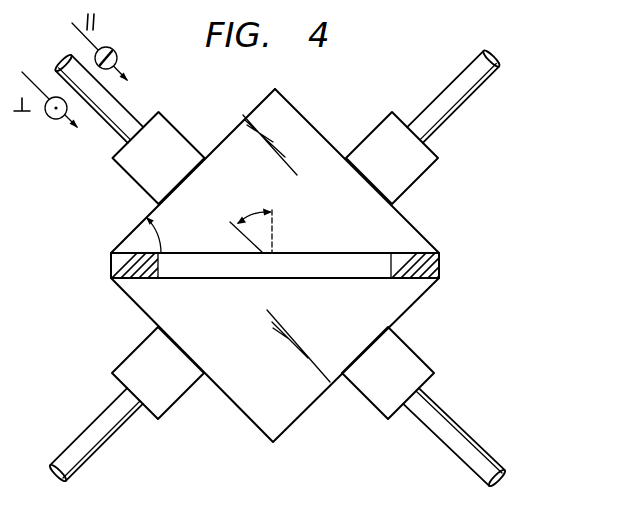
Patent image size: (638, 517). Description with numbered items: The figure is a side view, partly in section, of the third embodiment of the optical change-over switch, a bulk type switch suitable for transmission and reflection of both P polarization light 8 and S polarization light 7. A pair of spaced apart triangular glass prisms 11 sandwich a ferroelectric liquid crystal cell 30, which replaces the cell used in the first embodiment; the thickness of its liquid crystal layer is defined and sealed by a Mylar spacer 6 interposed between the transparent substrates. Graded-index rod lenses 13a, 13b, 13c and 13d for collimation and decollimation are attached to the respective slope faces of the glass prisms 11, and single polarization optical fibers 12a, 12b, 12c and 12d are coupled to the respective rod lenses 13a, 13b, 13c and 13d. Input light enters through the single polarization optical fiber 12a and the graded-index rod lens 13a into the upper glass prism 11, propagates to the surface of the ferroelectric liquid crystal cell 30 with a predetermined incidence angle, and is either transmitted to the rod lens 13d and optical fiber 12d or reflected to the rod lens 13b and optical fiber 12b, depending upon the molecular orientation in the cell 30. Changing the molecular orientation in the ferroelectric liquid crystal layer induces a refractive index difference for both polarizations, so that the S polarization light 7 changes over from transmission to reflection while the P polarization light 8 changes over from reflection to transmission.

The spacer 6 is at (111, 267).
The S polarization light 7 is at (47, 119).
The P polarization light 8 is at (117, 53).
The triangular glass prism 11 is at (284, 100).
The single polarization optical fiber 12a is at (122, 106).
The single polarization optical fiber 12b is at (458, 108).
The single polarization optical fiber 12c is at (97, 420).
The single polarization optical fiber 12d is at (453, 427).
The graded-index rod lens 13a is at (178, 137).
The graded-index rod lens 13b is at (373, 132).
The graded-index rod lens 13c is at (133, 353).
The graded-index rod lens 13d is at (410, 355).
The ferroelectric liquid crystal cell 30 is at (245, 272).